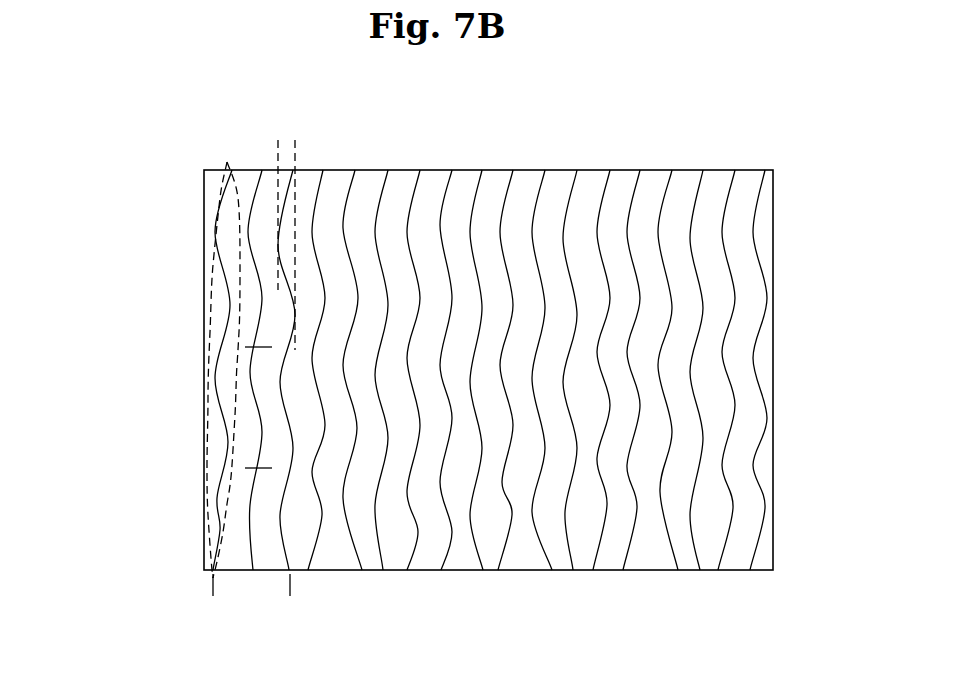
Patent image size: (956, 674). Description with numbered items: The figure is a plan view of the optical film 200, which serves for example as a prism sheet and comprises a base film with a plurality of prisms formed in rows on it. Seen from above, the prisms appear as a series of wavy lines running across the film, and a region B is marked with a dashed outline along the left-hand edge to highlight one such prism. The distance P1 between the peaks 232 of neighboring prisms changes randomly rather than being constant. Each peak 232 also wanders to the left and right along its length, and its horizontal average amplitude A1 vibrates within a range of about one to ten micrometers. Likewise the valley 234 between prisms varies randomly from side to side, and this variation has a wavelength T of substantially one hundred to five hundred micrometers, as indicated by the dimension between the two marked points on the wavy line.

The optical film 200 is at (426, 131).
The valley 234 is at (272, 347).
The peak 232 is at (272, 468).
The region B is at (200, 262).
The horizontal average amplitude A1 is at (242, 148).
The wavelength T is at (263, 348).
The distance between peaks P1 is at (213, 585).